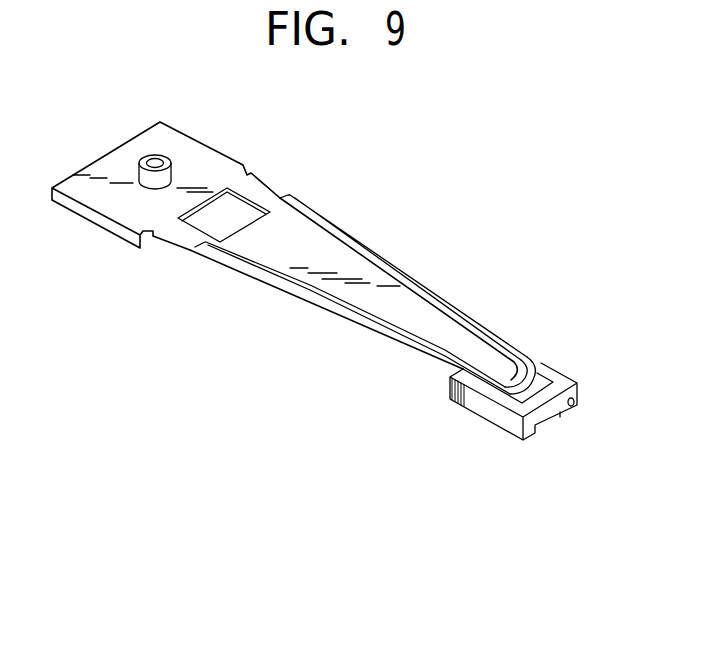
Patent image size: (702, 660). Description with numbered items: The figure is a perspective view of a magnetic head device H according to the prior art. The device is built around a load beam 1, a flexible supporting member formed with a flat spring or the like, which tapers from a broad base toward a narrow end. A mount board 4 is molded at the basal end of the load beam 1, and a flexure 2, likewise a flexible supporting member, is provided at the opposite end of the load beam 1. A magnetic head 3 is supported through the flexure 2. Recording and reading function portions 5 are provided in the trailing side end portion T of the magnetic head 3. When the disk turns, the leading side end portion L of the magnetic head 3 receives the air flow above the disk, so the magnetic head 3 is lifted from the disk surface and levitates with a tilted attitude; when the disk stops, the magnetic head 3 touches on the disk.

The load beam 1 is at (490, 342).
The flexure 2 is at (547, 367).
The magnetic head 3 is at (480, 410).
The mount board 4 is at (92, 228).
The recording and reading function portions 5 is at (572, 406).
The magnetic head device H is at (216, 311).
The leading side end portion L is at (444, 387).
The trailing side end portion T is at (554, 429).